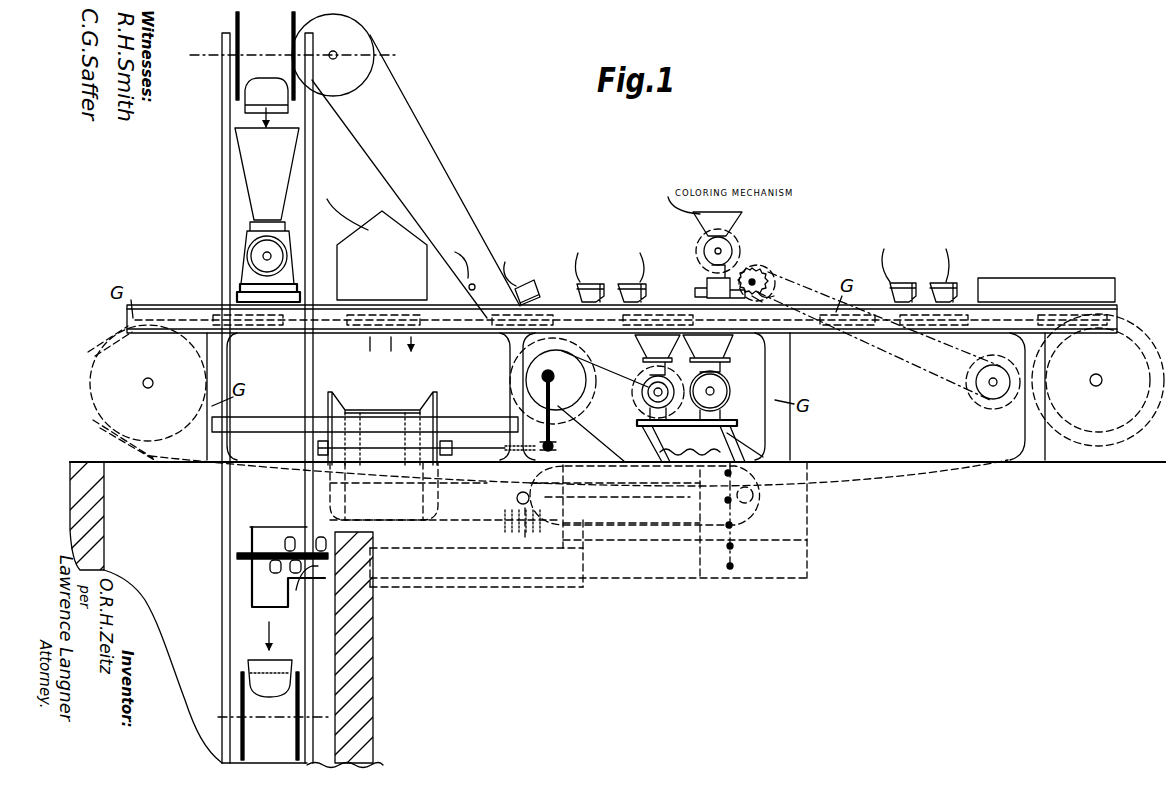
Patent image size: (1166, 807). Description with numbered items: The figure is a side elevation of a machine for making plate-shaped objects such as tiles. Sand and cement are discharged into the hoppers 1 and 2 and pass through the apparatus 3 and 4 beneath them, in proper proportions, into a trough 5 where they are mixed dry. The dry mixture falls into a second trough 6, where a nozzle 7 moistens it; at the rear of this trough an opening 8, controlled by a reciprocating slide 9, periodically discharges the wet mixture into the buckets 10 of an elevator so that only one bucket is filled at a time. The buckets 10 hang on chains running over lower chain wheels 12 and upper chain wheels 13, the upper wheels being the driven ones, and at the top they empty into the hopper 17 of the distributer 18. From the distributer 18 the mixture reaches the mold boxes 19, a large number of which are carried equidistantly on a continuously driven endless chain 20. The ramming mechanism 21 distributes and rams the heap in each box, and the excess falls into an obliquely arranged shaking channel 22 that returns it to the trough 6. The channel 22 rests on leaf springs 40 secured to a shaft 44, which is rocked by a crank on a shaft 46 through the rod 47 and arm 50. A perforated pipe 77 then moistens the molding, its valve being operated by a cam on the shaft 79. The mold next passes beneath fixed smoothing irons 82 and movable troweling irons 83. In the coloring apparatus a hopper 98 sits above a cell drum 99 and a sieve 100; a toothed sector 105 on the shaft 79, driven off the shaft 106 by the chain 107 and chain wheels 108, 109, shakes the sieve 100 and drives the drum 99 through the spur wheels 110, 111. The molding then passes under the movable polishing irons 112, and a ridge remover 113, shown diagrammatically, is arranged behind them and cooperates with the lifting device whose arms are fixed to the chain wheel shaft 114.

The hopper 1 is at (708, 353).
The hopper 2 is at (657, 355).
The proportioning apparatus 3 is at (724, 391).
The proportioning apparatus 4 is at (645, 384).
The trough 5 is at (646, 464).
The second trough 6 is at (262, 532).
The nozzle 7 is at (508, 512).
The opening 8 is at (256, 592).
The slide 9 is at (283, 607).
The bucket 10 is at (268, 387).
The lower chain wheel 12 is at (294, 733).
The upper chain wheel 13 is at (290, 29).
The hopper 17 is at (267, 174).
The distributer 18 is at (270, 252).
The mold box 19 is at (108, 348).
The endless chain 20 is at (170, 318).
The ramming mechanism 21 is at (380, 244).
The shaking channel 22 is at (382, 428).
The leaf spring 40 is at (446, 440).
The shaft 44 is at (471, 452).
The shaft 46 is at (553, 377).
The rod 47 is at (552, 402).
The arm 50 is at (555, 447).
The perforated pipe 77 is at (428, 295).
The shaft 79 is at (766, 296).
The fixed smoothing iron 82 is at (528, 268).
The movable troweling iron 83 is at (603, 282).
The hopper 98 is at (717, 224).
The cell drum 99 is at (704, 251).
The sieve 100 is at (710, 285).
The toothed sector 105 is at (766, 283).
The shaft 106 is at (993, 386).
The chain 107 is at (882, 356).
The chain wheel 108 is at (975, 378).
The chain wheel 109 is at (756, 272).
The spur wheel 110 is at (765, 278).
The spur wheel 111 is at (740, 246).
The polishing iron 112 is at (906, 280).
The ridge remover 113 is at (1046, 279).
The chain wheel shaft 114 is at (1098, 380).